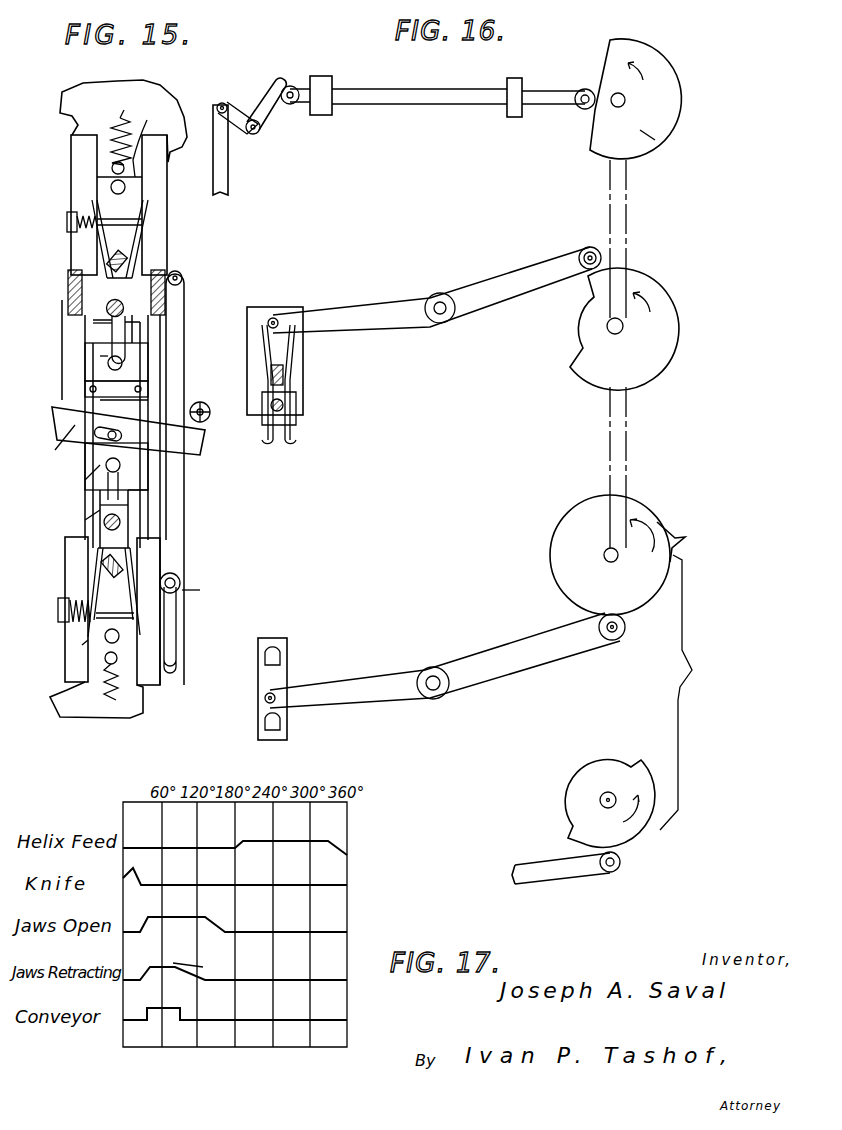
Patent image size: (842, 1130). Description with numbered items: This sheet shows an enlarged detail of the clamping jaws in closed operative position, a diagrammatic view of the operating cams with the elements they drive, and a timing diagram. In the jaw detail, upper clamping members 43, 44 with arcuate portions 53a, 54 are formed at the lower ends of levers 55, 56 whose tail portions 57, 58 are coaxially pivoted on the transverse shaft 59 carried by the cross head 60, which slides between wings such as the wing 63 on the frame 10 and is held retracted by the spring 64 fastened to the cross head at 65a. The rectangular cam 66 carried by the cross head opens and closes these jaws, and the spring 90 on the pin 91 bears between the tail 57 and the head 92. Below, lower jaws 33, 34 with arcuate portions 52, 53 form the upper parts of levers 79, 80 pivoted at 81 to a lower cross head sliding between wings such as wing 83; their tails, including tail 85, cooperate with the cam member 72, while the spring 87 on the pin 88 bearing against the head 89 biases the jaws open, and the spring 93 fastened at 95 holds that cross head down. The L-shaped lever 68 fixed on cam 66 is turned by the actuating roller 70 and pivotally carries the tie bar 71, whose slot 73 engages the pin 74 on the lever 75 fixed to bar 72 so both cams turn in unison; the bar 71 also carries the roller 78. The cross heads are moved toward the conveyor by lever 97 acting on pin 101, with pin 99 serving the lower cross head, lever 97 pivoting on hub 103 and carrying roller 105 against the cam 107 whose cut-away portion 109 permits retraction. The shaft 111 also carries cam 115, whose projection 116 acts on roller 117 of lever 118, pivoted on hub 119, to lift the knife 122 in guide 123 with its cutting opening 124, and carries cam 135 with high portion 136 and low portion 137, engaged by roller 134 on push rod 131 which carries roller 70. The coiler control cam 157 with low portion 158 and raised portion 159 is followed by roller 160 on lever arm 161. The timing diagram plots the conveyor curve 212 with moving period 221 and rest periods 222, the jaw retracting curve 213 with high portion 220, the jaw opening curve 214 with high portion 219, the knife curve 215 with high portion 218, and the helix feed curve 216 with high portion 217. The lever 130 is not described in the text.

In FIG. 15, the frame 10 is at (160, 90).
In FIG. 15, the lower clamping jaw 33 is at (128, 506).
In FIG. 15, the lower clamping jaw 34 is at (82, 542).
In FIG. 15, the upper clamping jaw 43 is at (125, 361).
In FIG. 16, the upper clamping jaw 43 is at (296, 428).
In FIG. 15, the upper clamping jaw 44 is at (105, 357).
In FIG. 16, the upper clamping jaw 44 is at (297, 438).
In FIG. 15, the arcuate portion 52 is at (125, 472).
In FIG. 15, the arcuate portion 53 is at (100, 492).
In FIG. 15, the arcuate portion 53a is at (120, 371).
In FIG. 15, the arcuate portion 54 is at (93, 397).
In FIG. 15, the lever 55 is at (125, 338).
In FIG. 15, the lever 56 is at (105, 325).
In FIG. 15, the tail portion 57 is at (100, 245).
In FIG. 15, the tail portion 58 is at (150, 210).
In FIG. 15, the transversely extending shaft 59 is at (106, 308).
In FIG. 15, the cross head 60 is at (135, 183).
In FIG. 16, the cross head 60 is at (262, 312).
In FIG. 15, the wing 63 is at (76, 144).
In FIG. 15, the spring 64 is at (124, 113).
In FIG. 15, the spring fastening point 65a is at (153, 139).
In FIG. 15, the opening and closing cam 66 is at (128, 260).
In FIG. 16, the opening and closing cam 66 is at (284, 384).
In FIG. 15, the L-shaped lever 68 is at (183, 272).
In FIG. 16, the L-shaped lever 68 is at (237, 115).
In FIG. 16, the actuating roller 70 is at (290, 85).
In FIG. 15, the tie bar 71 is at (180, 310).
In FIG. 16, the tie bar 71 is at (226, 160).
In FIG. 15, the cam member 72 is at (125, 560).
In FIG. 15, the slot 73 is at (177, 620).
In FIG. 15, the pin 74 is at (200, 590).
In FIG. 15, the lever 75 is at (181, 582).
In FIG. 15, the roller 78 is at (208, 419).
In FIG. 15, the lever 79 is at (148, 492).
In FIG. 15, the lever 80 is at (100, 512).
In FIG. 15, the pivot 81 is at (122, 522).
In FIG. 15, the wing 83 is at (155, 637).
In FIG. 15, the tail portion 85 is at (85, 642).
In FIG. 15, the spring 87 is at (78, 632).
In FIG. 15, the pin 88 is at (118, 590).
In FIG. 15, the head 89 is at (60, 612).
In FIG. 15, the spring 90 is at (78, 240).
In FIG. 15, the pin 91 is at (115, 218).
In FIG. 15, the head 92 is at (67, 222).
In FIG. 15, the spring 93 is at (120, 692).
In FIG. 15, the spring fastening point 95 is at (118, 666).
In FIG. 16, the lever 97 is at (372, 305).
In FIG. 15, the pin 99 is at (119, 638).
In FIG. 15, the pin 101 is at (111, 186).
In FIG. 16, the hub 103 is at (440, 322).
In FIG. 16, the roller 105 is at (582, 254).
In FIG. 16, the cam 107 is at (677, 329).
In FIG. 16, the cut-away portion 109 is at (575, 330).
In FIG. 16, the shaft 111 is at (624, 101).
In FIG. 16, the cam 115 is at (560, 528).
In FIG. 16, the projection 116 is at (676, 538).
In FIG. 16, the roller 117 is at (613, 641).
In FIG. 15, the lever 118 is at (100, 466).
In FIG. 16, the lever 118 is at (488, 662).
In FIG. 16, the hub 119 is at (438, 697).
In FIG. 15, the knife 122 is at (120, 406).
In FIG. 16, the knife 122 is at (282, 676).
In FIG. 15, the guide 123 is at (60, 445).
In FIG. 16, the cutting opening 124 is at (280, 646).
In FIG. 15, the lever 130 is at (204, 447).
In FIG. 16, the push rod 131 is at (402, 105).
In FIG. 16, the roller 134 is at (583, 90).
In FIG. 16, the cam 135 is at (656, 142).
In FIG. 16, the high portion 136 is at (678, 82).
In FIG. 16, the low portion 137 is at (594, 112).
In FIG. 16, the cam 157 is at (596, 785).
In FIG. 16, the low portion 158 is at (568, 783).
In FIG. 16, the raised portion 159 is at (643, 838).
In FIG. 16, the roller 160 is at (622, 870).
In FIG. 16, the lever arm 161 is at (565, 880).
In FIG. 17, the conveyor curve 212 is at (336, 1028).
In FIG. 17, the jaw retracting curve 213 is at (346, 976).
In FIG. 17, the jaw opening curve 214 is at (338, 930).
In FIG. 17, the knife curve 215 is at (346, 882).
In FIG. 17, the helix feed curve 216 is at (334, 842).
In FIG. 17, the high portion 217 is at (262, 840).
In FIG. 17, the high portion 218 is at (146, 870).
In FIG. 17, the high portion 219 is at (192, 917).
In FIG. 17, the high portion 220 is at (201, 954).
In FIG. 17, the high portion 221 is at (172, 1010).
In FIG. 17, the low portion 222 is at (258, 1022).